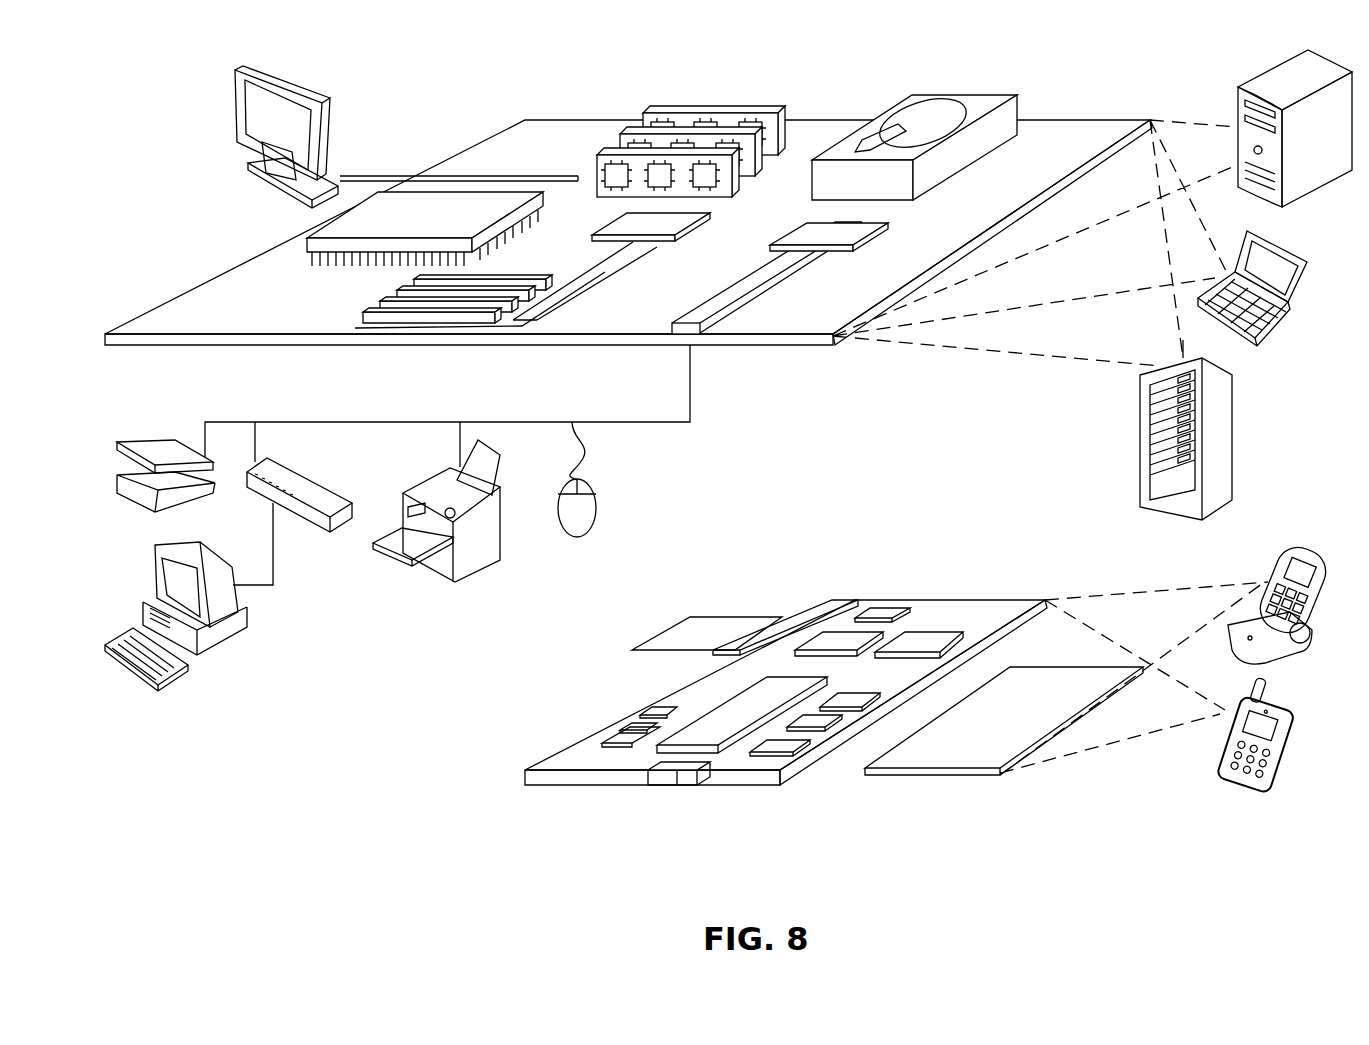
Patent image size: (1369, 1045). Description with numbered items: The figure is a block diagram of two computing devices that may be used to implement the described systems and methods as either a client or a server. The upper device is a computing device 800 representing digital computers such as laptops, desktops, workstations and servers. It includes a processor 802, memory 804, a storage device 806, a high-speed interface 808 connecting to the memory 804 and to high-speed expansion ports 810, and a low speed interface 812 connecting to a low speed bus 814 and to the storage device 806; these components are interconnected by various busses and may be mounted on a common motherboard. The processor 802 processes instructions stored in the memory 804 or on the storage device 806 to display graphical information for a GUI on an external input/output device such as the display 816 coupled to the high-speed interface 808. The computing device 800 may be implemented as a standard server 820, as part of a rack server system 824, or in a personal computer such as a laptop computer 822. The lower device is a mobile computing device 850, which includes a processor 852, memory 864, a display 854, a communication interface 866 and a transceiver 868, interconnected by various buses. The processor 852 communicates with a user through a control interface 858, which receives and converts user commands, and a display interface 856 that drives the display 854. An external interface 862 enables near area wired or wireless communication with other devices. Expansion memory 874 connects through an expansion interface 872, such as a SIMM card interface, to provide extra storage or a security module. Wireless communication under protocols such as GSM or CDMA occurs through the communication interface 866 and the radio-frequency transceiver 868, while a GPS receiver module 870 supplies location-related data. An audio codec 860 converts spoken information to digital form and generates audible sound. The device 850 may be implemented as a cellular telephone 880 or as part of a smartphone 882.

The computing device 800 is at (446, 86).
The processor 802 is at (305, 241).
The memory 804 is at (670, 113).
The storage device 806 is at (910, 97).
The high-speed interface 808 is at (623, 227).
The high-speed expansion ports 810 is at (372, 313).
The low speed interface 812 is at (812, 231).
The low speed bus 814 is at (717, 338).
The display 816 is at (243, 68).
The standard server 820 is at (1240, 108).
The laptop computer 822 is at (1308, 262).
The rack server system 824 is at (1141, 466).
The computing device 850 is at (498, 787).
The processor 852 is at (713, 740).
The display 854 is at (963, 757).
The display interface 856 is at (788, 756).
The control interface 858 is at (818, 722).
The audio codec 860 is at (847, 700).
The external interface 862 is at (676, 774).
The memory 864 is at (632, 730).
The communication interface 866 is at (840, 640).
The transceiver 868 is at (917, 633).
The GPS receiver module 870 is at (882, 606).
The expansion interface 872 is at (765, 616).
The expansion memory 874 is at (695, 616).
The cellular telephone 880 is at (1290, 566).
The smartphone 882 is at (1231, 745).